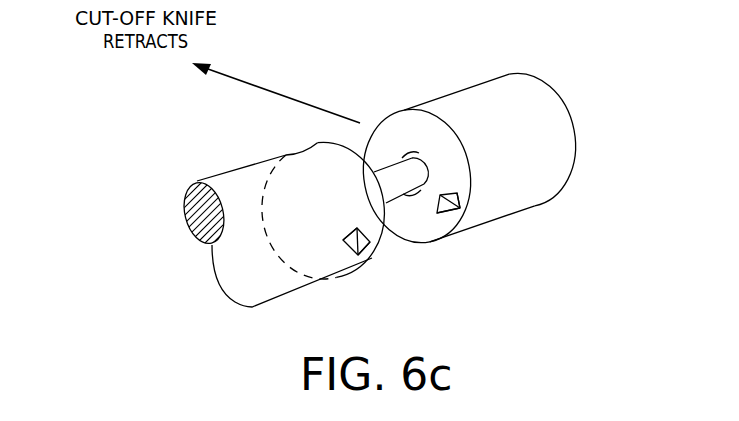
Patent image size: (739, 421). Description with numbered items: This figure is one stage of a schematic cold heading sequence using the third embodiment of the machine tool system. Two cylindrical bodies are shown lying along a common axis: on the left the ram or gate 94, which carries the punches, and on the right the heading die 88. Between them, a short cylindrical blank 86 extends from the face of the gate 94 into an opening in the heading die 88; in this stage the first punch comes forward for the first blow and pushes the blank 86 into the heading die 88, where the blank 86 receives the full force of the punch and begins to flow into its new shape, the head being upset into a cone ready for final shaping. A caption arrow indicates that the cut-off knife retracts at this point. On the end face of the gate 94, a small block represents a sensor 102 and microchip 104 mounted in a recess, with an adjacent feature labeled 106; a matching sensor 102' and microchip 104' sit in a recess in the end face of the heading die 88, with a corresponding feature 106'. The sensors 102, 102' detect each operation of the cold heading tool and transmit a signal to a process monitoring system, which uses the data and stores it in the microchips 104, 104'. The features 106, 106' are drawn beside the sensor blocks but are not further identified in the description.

The blank 86 is at (408, 210).
The heading die 88 is at (568, 92).
The ram or gate 94 is at (217, 173).
The sensor 102 is at (335, 279).
The microchip 104 is at (379, 274).
The knife face 106 is at (328, 216).
The sensor 102' is at (490, 188).
The microchip 104' is at (486, 244).
The knife face (drum side) 106' is at (506, 220).